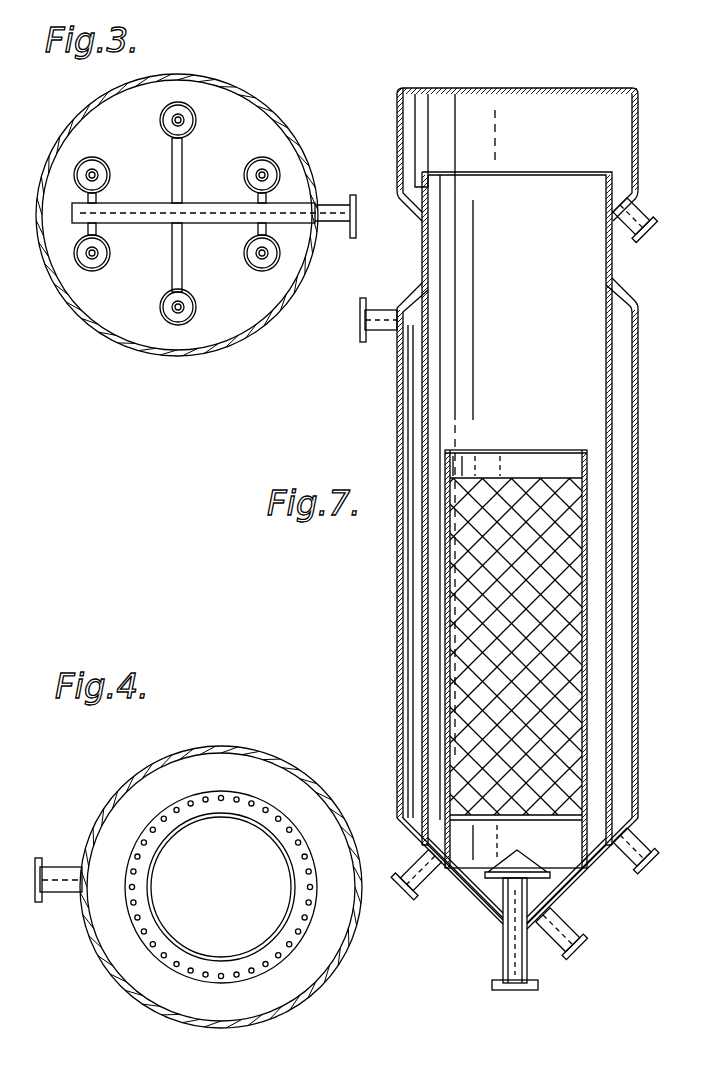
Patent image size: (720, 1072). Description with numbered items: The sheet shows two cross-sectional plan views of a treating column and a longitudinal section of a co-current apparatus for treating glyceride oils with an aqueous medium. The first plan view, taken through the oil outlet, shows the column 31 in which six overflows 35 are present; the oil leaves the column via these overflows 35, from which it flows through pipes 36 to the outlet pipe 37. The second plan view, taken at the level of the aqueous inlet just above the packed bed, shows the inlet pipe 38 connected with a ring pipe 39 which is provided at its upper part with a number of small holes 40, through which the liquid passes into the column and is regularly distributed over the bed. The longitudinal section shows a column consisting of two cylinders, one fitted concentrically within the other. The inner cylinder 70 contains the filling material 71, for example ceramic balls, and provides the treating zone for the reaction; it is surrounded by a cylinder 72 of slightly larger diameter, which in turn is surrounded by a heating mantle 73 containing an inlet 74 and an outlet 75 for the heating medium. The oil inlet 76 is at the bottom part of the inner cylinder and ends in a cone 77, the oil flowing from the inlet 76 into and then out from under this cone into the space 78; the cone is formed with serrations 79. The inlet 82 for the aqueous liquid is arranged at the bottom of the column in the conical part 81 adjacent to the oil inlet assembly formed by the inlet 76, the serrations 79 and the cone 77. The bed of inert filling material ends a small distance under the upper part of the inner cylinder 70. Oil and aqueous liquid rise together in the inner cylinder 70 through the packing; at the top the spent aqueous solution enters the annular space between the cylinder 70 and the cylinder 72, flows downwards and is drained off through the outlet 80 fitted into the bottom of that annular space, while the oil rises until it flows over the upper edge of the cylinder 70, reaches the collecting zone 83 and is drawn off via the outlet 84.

In FIG. 3, the column 31 is at (296, 136).
In FIG. 4, the column 31 is at (158, 758).
In FIG. 3, the overflows 35 is at (161, 122).
In FIG. 3, the pipes 36 is at (175, 176).
In FIG. 3, the outlet pipe 37 is at (324, 208).
In FIG. 4, the inlet pipe 38 is at (55, 868).
In FIG. 4, the ring pipe 39 is at (167, 935).
In FIG. 4, the small holes 40 is at (208, 793).
In FIG. 7, the inner cylinder 70 is at (582, 522).
In FIG. 7, the filling material 71 is at (483, 622).
In FIG. 7, the cylinder 72 is at (607, 582).
In FIG. 7, the heating mantle 73 is at (623, 400).
In FIG. 7, the inlet 74 is at (393, 326).
In FIG. 7, the outlet 75 is at (638, 872).
In FIG. 7, the oil inlet 76 is at (505, 952).
In FIG. 7, the cone 77 is at (538, 860).
In FIG. 7, the space 78 is at (478, 852).
In FIG. 7, the serrations 79 is at (535, 876).
In FIG. 7, the outlet 80 is at (430, 887).
In FIG. 7, the conical part 81 is at (490, 900).
In FIG. 7, the inlet 82 is at (578, 934).
In FIG. 7, the collecting zone 83 is at (460, 279).
In FIG. 7, the outlet 84 is at (635, 213).